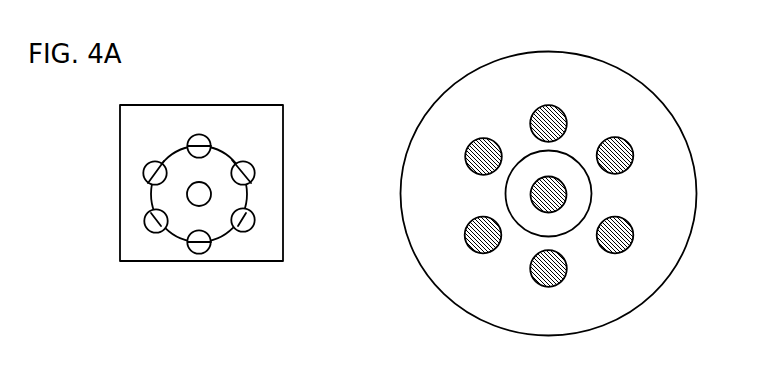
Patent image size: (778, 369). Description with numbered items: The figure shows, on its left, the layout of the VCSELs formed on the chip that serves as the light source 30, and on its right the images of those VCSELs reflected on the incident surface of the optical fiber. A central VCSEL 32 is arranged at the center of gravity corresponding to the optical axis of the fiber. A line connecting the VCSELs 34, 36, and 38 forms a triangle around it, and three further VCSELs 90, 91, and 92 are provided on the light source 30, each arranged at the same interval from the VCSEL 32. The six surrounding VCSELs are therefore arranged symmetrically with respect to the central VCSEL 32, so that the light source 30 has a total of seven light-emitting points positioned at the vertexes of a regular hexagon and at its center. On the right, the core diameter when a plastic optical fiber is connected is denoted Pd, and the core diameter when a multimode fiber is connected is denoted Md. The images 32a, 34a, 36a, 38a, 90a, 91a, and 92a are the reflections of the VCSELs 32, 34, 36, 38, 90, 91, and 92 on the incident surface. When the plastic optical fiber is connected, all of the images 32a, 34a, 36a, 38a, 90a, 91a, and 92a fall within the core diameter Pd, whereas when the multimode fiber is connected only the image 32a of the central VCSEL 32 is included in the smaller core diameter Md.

The light source 30 is at (267, 105).
The central VCSEL 32 is at (211, 193).
The VCSEL 34 is at (200, 134).
The VCSEL 36 is at (155, 232).
The VCSEL 38 is at (241, 231).
The VCSEL 90 is at (254, 165).
The VCSEL 91 is at (199, 254).
The VCSEL 92 is at (147, 170).
The core diameter when POF is connected Pd is at (648, 88).
The core diameter when MMF is connected Md is at (570, 153).
The image of VCSEL 32 32a is at (562, 192).
The image of VCSEL 34 34a is at (548, 105).
The image of VCSEL 36 36a is at (473, 247).
The image of VCSEL 38 38a is at (633, 238).
The image of VCSEL 90 90a is at (633, 148).
The image of VCSEL 91 91a is at (567, 277).
The image of VCSEL 92 92a is at (468, 148).